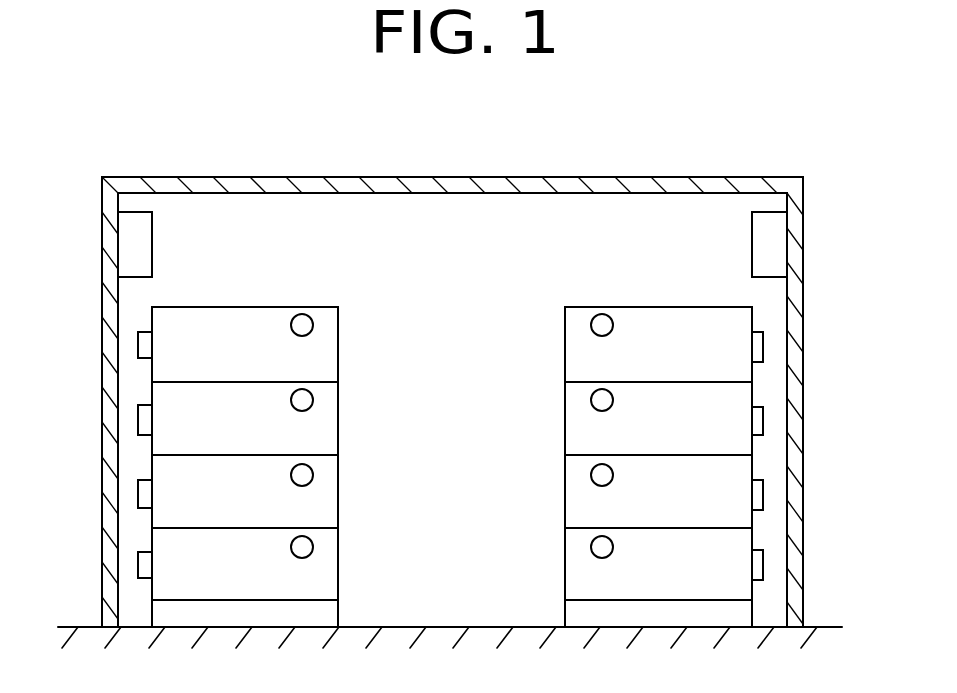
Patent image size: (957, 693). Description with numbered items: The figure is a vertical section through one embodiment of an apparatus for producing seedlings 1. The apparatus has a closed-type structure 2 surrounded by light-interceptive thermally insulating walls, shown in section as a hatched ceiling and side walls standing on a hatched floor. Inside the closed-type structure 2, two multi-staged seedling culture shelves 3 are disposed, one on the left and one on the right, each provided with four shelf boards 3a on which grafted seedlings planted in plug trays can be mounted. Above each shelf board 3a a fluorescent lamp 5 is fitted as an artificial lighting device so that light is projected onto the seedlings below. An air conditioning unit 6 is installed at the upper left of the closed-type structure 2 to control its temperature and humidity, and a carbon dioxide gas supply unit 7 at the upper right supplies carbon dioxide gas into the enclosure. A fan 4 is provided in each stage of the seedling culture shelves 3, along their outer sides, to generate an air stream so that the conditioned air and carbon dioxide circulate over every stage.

The apparatus for producing seedlings 1 is at (884, 226).
The closed-type structure 2 is at (485, 177).
The seedling culture shelf 3 is at (356, 300).
The shelf board 3a is at (320, 382).
The fan 4 is at (140, 496).
The fluorescent lamp 5 is at (306, 316).
The air conditioning unit 6 is at (150, 243).
The carbon dioxide gas supply unit 7 is at (752, 236).